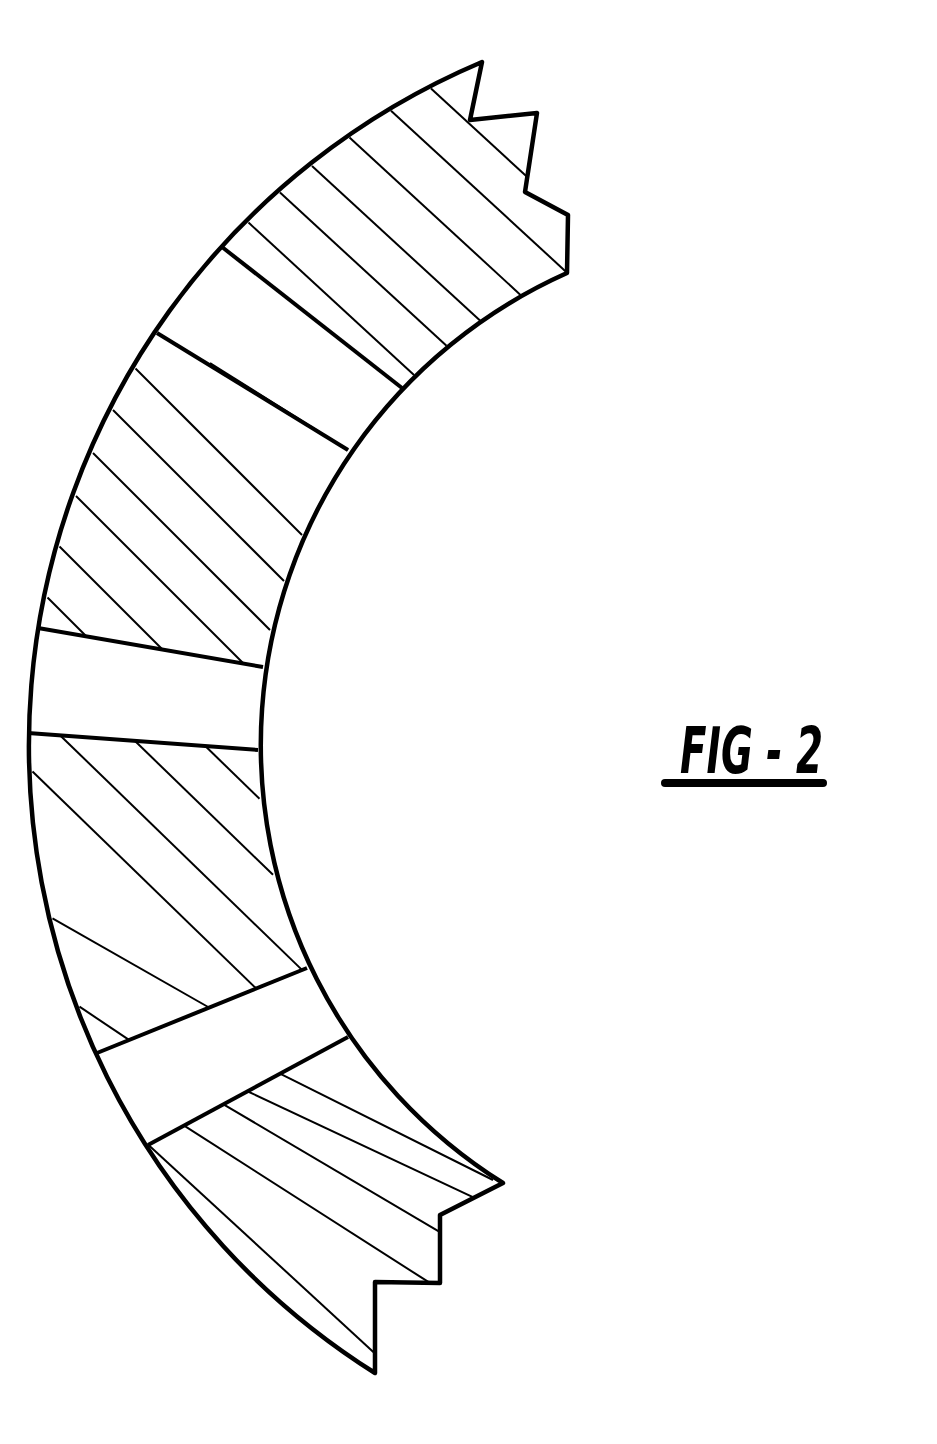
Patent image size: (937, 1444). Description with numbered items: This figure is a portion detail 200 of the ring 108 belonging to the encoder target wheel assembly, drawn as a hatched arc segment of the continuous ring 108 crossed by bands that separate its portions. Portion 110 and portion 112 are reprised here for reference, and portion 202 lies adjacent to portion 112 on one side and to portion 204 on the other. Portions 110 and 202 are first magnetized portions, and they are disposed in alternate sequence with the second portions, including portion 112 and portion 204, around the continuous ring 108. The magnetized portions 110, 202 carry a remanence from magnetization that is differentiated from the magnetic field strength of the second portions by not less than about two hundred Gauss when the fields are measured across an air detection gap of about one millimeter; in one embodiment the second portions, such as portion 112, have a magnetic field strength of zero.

The ring 108 is at (380, 226).
The portion 110 is at (185, 540).
The portion 112 is at (207, 690).
The portion detail 200 is at (700, 340).
The portion 202 is at (152, 887).
The portion 204 is at (252, 1033).